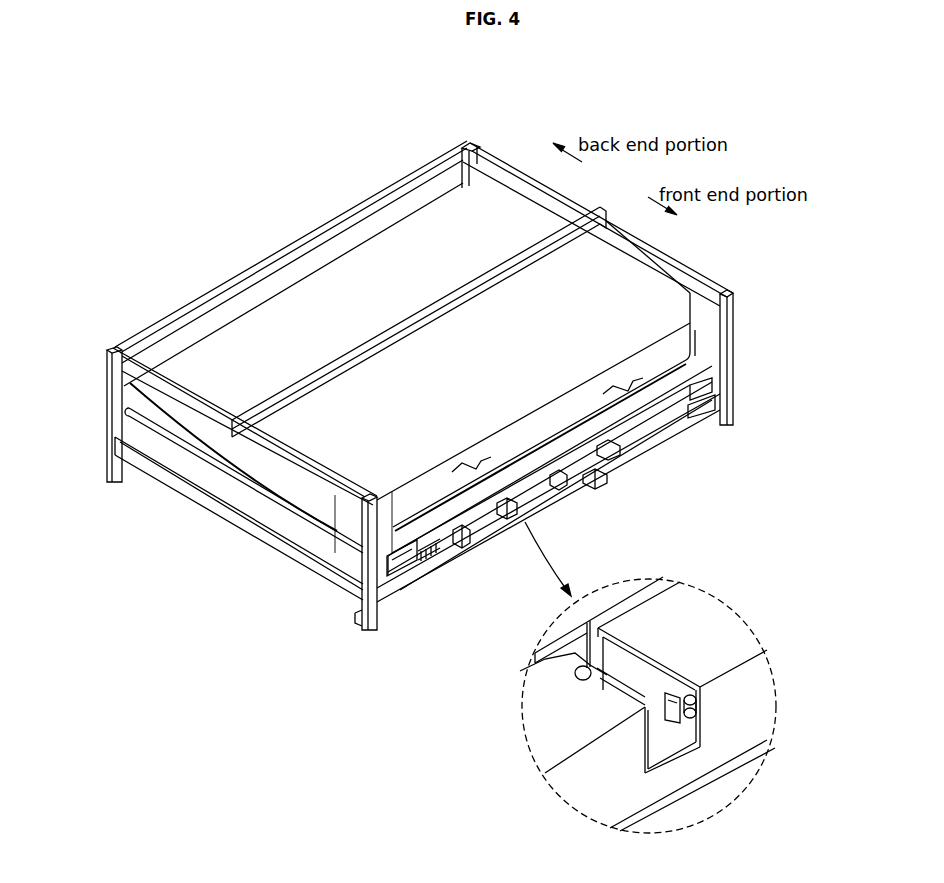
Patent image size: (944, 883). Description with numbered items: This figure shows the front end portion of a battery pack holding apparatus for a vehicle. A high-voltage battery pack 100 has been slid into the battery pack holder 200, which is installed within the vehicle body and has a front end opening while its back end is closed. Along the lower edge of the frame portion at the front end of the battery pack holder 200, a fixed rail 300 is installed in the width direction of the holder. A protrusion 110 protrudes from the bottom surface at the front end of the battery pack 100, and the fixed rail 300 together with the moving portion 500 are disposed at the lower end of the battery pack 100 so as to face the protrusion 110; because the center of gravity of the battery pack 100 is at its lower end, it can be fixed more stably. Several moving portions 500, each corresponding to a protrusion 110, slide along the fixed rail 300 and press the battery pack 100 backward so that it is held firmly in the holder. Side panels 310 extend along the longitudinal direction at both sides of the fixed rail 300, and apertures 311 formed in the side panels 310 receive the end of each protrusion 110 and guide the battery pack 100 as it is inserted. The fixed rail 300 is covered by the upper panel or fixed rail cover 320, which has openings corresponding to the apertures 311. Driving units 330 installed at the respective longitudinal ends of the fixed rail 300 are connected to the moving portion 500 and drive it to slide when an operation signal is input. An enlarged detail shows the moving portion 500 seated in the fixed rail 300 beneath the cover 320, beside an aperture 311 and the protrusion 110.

The high-voltage battery pack 100 is at (345, 297).
The battery pack holder 200 is at (740, 288).
The fixed rail 300 is at (420, 578).
The side panels 310 is at (440, 558).
The apertures 311 is at (666, 734).
The upper panel 320 is at (702, 615).
The driving units 330 is at (403, 582).
The moving portion 500 is at (641, 679).
The protrusion 110 is at (547, 677).